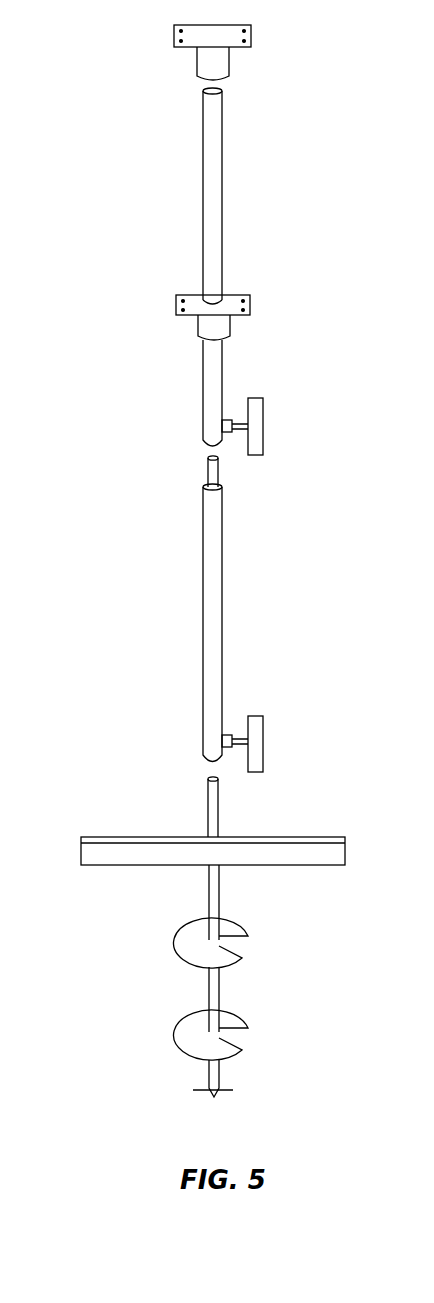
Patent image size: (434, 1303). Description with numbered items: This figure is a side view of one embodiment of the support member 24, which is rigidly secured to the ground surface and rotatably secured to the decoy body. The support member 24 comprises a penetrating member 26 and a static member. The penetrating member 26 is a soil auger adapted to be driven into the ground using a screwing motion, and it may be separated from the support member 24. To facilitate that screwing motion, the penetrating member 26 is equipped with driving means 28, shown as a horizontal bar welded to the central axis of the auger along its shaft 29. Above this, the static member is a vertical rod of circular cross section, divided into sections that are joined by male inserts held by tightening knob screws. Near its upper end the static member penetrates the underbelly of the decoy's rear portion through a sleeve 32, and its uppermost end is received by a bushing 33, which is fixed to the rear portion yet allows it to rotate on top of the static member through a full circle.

The support member 24 is at (107, 452).
The penetrating member 26 is at (191, 981).
The driving means 28 is at (106, 837).
The shaft 29 is at (176, 888).
The sleeve 32 is at (198, 324).
The bushing 33 is at (197, 57).